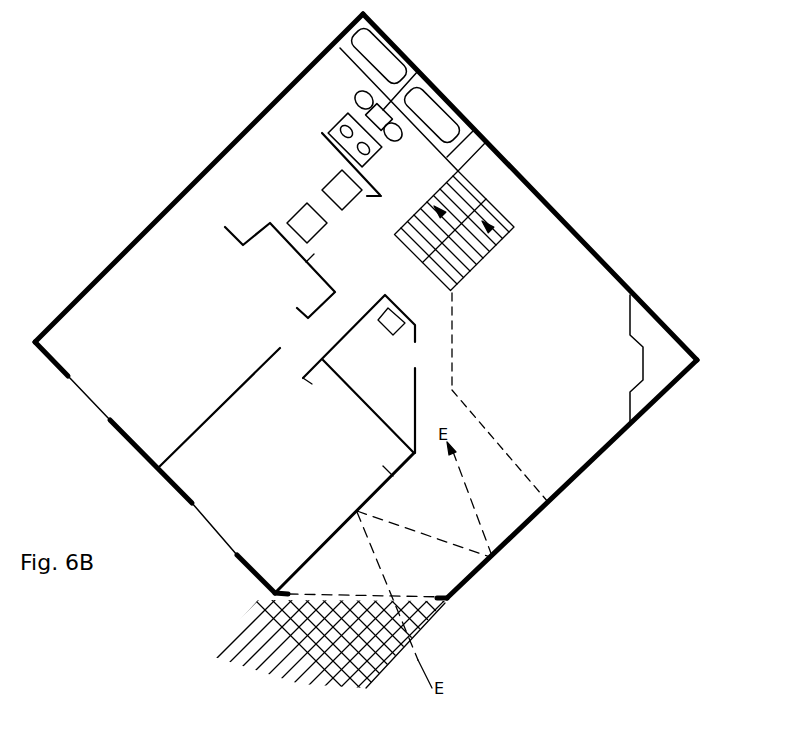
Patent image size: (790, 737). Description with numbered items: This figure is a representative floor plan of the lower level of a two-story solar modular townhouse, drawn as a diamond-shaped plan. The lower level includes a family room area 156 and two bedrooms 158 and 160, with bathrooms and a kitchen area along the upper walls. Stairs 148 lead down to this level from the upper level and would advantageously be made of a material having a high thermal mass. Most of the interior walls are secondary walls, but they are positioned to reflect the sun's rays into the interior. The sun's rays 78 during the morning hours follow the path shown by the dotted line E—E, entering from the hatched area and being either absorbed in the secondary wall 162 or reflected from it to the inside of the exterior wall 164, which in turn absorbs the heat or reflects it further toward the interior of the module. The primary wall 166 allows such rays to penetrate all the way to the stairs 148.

The sun's rays 78 is at (417, 658).
The stairs 148 is at (483, 238).
The family room area 156 is at (542, 384).
The bedroom 158 is at (193, 351).
The bedroom 160 is at (288, 477).
The secondary wall 162 is at (312, 556).
The exterior wall 164 is at (505, 553).
The primary wall 166 is at (414, 400).